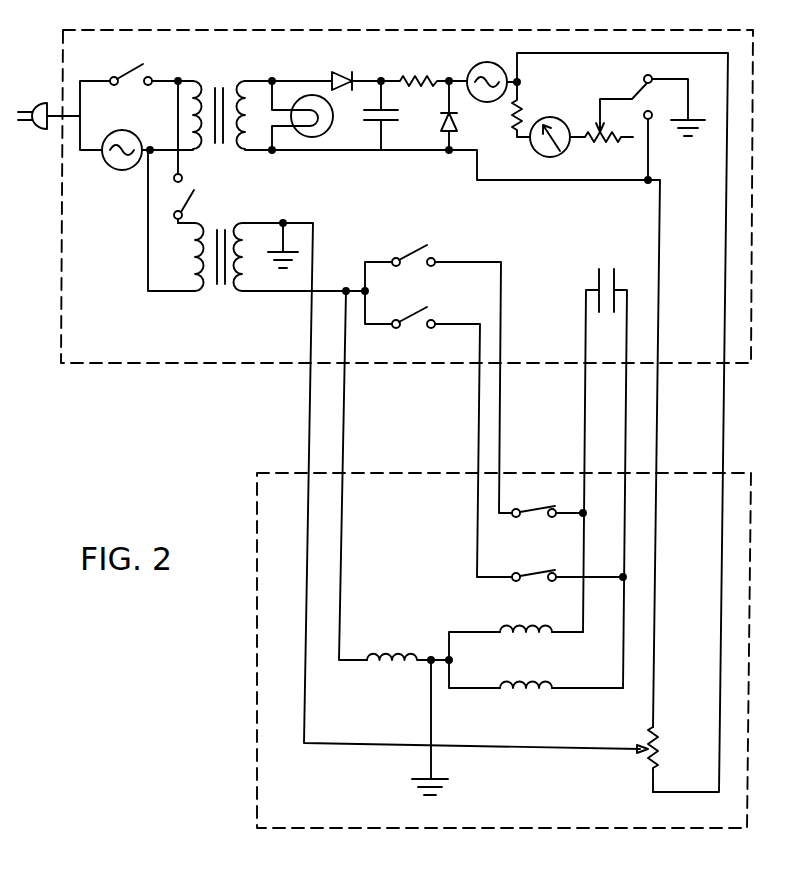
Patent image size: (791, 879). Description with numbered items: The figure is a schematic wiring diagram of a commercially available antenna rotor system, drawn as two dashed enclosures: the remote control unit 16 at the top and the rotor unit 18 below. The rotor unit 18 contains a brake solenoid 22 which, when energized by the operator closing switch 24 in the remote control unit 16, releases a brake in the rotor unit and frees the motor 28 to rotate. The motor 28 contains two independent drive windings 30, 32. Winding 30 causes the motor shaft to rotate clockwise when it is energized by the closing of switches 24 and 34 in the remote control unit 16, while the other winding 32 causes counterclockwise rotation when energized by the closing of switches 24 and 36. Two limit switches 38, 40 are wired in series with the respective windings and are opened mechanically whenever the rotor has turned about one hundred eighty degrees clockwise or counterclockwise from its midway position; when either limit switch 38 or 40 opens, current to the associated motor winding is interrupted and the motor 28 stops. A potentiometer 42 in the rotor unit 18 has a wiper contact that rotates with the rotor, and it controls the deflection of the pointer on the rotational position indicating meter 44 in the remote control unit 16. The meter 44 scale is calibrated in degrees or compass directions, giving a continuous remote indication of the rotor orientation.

The remote control unit 16 is at (163, 366).
The rotor unit 18 is at (365, 828).
The solenoid 22 is at (379, 649).
The switch 24 is at (195, 193).
The motor 28 is at (536, 658).
The drive winding 30 is at (518, 623).
The drive winding 32 is at (516, 690).
The switch 34 is at (406, 252).
The switch 36 is at (406, 320).
The limit switch 38 is at (531, 511).
The limit switch 40 is at (531, 574).
The potentiometer 42 is at (660, 740).
The rotational position indicating meter 44 is at (536, 122).